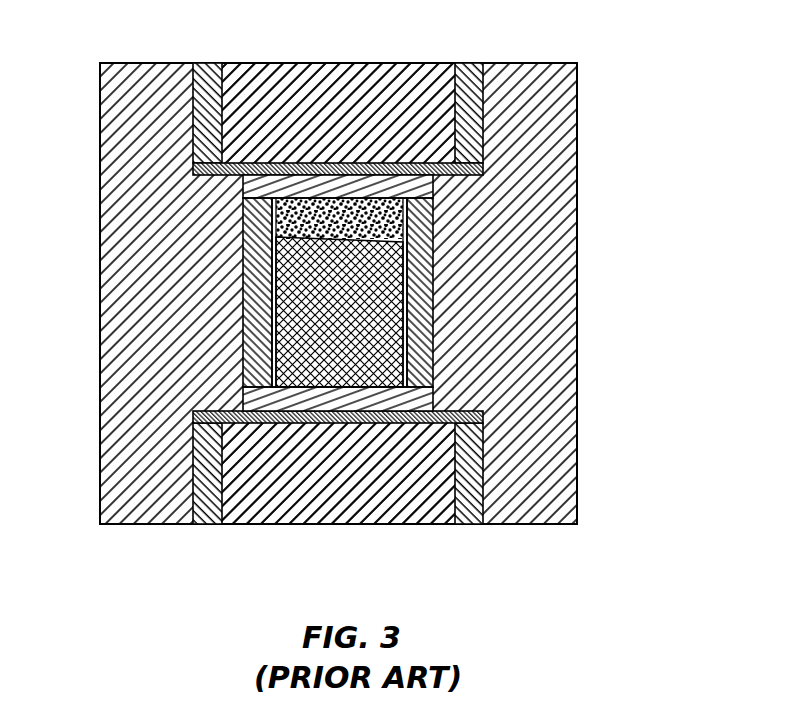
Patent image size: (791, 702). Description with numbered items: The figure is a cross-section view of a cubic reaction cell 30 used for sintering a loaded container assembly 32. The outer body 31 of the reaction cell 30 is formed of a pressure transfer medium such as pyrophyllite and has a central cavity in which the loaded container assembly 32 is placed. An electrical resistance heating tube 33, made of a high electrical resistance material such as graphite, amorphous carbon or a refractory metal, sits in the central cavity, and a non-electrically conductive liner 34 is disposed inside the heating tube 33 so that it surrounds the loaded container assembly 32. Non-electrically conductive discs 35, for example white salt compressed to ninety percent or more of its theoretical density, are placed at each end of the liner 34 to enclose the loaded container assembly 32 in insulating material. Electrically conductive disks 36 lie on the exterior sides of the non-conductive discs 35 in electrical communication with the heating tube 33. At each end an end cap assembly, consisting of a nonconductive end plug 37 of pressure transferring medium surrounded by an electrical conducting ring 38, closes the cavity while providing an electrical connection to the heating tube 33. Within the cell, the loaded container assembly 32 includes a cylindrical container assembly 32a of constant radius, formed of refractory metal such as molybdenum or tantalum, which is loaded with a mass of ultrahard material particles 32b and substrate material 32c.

The reaction cell 30 is at (355, 303).
The outer body 31 is at (100, 138).
The loaded container assembly 32 is at (354, 287).
The cylindrical container assembly 32a is at (427, 347).
The ultrahard material particles 32b is at (447, 203).
The substrate material 32c is at (415, 318).
The electrical resistance heating tube 33 is at (248, 336).
The non-electrically conductive liner 34 is at (425, 264).
The non-electrically conductive discs 35 is at (243, 186).
The electrically conductive disks 36 is at (340, 164).
The nonconductive end plug 37 is at (298, 75).
The electrical conducting ring 38 is at (208, 63).